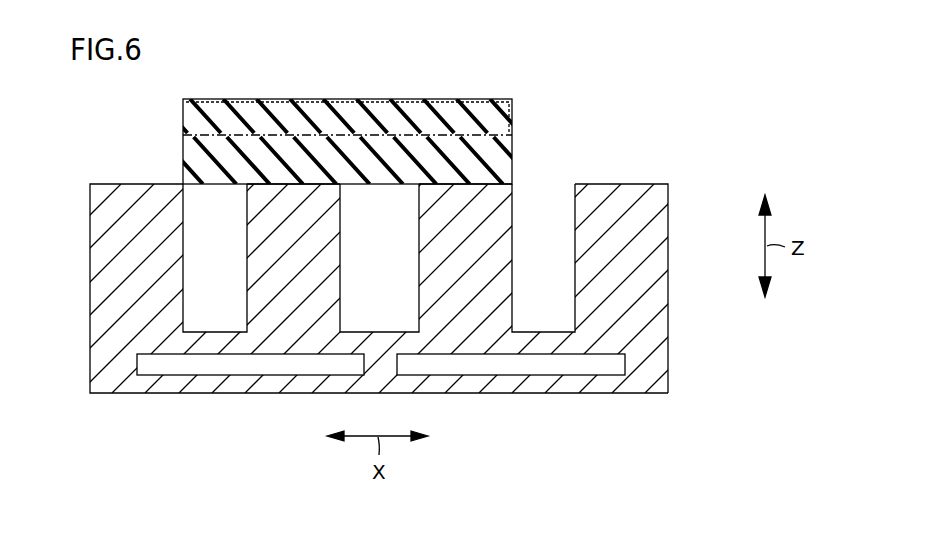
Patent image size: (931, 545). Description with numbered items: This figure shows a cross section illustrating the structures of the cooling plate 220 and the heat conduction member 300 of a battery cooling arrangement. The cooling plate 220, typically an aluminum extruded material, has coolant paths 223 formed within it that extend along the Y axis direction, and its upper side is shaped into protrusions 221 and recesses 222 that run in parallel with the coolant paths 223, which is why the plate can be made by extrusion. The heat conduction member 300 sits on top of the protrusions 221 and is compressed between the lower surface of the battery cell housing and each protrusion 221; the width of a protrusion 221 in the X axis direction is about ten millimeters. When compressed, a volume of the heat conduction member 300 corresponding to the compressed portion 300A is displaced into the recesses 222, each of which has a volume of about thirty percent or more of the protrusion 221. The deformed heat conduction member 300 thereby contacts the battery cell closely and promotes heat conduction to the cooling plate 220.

The cooling plate 220 is at (693, 301).
The protrusion 221 is at (620, 210).
The recess 222 is at (183, 233).
The coolant path 223 is at (513, 376).
The heat conduction member 300 is at (512, 153).
The compressed portion 300A is at (370, 99).